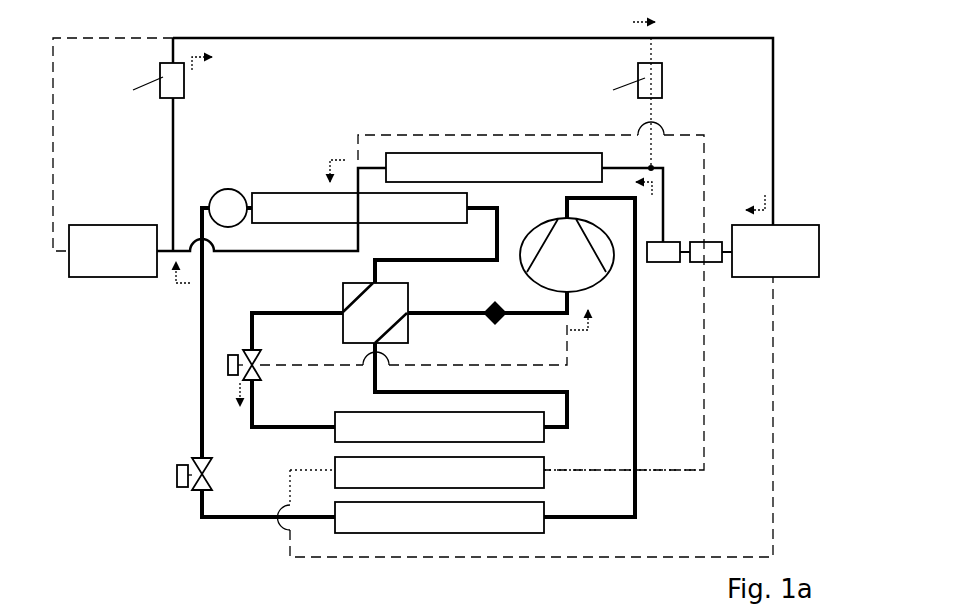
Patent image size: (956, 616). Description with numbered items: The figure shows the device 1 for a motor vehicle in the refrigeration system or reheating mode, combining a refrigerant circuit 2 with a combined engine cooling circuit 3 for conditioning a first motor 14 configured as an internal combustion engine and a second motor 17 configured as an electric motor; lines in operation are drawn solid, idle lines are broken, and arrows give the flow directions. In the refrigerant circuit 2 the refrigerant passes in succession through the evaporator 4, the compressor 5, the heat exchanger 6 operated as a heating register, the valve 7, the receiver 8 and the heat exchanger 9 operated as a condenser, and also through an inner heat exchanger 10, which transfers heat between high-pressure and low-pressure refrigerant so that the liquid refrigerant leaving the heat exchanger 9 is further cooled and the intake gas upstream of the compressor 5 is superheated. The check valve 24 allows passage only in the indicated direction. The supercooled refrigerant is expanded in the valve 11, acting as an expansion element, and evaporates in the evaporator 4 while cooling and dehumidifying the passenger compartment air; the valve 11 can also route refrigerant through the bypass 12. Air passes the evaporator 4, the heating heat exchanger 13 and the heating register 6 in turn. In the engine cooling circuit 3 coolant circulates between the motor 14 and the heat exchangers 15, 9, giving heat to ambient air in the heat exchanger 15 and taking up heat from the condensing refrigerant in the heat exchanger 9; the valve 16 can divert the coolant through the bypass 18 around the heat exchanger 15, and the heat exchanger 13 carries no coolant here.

The device 1 is at (788, 103).
The refrigerant circuit 2 is at (207, 528).
The combined engine cooling circuit 3 is at (304, 51).
The evaporator 4 is at (431, 438).
The compressor 5 is at (588, 280).
The heat exchanger operated as a heating register 6 is at (431, 528).
The valve 7 is at (176, 470).
The receiver 8 is at (230, 200).
The heat exchanger operated as a condenser 9 is at (351, 219).
The inner heat exchanger 10 is at (405, 292).
The valve operated as an expansion element 11 is at (232, 354).
The bypass 12 is at (568, 367).
The heating heat exchanger 13 is at (425, 483).
The first motor 14 is at (762, 261).
The heat exchanger 15 is at (481, 178).
The valve 16 is at (700, 255).
The second motor 17 is at (100, 261).
The bypass 18 is at (495, 135).
The check valve 24 is at (502, 320).